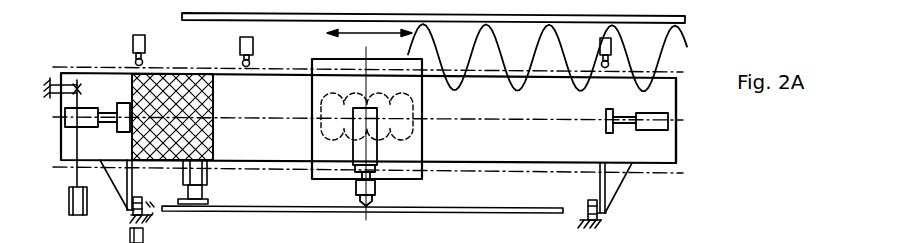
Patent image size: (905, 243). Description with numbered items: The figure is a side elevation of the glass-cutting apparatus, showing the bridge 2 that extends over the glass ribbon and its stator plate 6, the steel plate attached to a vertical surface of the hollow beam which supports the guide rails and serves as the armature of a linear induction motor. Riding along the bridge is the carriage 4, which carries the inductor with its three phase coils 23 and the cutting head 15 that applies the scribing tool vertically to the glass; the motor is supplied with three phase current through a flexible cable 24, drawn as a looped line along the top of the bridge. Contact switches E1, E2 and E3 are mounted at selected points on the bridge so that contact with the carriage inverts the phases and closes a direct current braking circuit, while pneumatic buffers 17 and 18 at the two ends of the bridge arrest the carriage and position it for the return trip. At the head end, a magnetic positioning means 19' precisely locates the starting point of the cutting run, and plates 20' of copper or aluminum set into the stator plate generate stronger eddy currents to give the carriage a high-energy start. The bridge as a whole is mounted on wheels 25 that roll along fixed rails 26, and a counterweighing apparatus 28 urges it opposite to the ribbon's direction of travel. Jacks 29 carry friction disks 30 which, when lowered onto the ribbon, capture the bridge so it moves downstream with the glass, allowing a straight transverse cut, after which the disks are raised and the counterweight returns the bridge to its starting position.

The bridge 2 is at (684, 137).
The carriage 4 is at (399, 179).
The stator plate 6 is at (657, 157).
The cutting head 15 is at (374, 153).
The pneumatic buffer 17 is at (83, 113).
The pneumatic buffer 18 is at (657, 119).
The magnetic positioning means 19' is at (107, 88).
The plates of copper or aluminum 20' is at (169, 117).
The three phase coils 23 is at (328, 94).
The flexible cable 24 is at (688, 39).
The wheels 25 is at (132, 215).
The fixed rails 26 is at (148, 216).
The counterweighing apparatus 28 is at (68, 203).
The jacks 29 is at (207, 182).
The friction disks 30 is at (208, 202).
The contact switch E1 is at (600, 50).
The contact switch E2 is at (259, 47).
The contact switch E3 is at (154, 48).